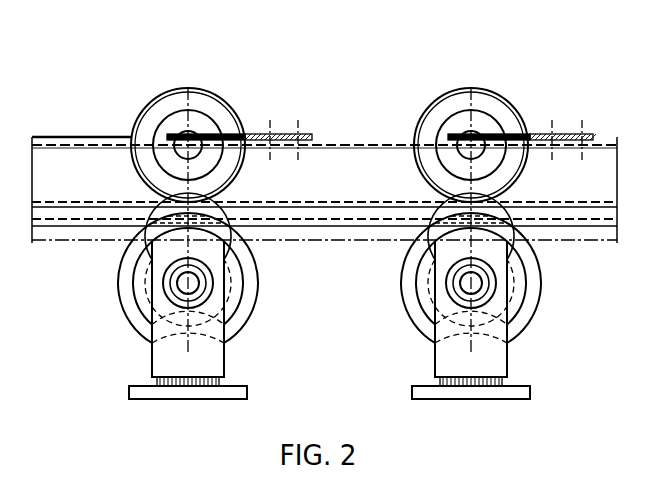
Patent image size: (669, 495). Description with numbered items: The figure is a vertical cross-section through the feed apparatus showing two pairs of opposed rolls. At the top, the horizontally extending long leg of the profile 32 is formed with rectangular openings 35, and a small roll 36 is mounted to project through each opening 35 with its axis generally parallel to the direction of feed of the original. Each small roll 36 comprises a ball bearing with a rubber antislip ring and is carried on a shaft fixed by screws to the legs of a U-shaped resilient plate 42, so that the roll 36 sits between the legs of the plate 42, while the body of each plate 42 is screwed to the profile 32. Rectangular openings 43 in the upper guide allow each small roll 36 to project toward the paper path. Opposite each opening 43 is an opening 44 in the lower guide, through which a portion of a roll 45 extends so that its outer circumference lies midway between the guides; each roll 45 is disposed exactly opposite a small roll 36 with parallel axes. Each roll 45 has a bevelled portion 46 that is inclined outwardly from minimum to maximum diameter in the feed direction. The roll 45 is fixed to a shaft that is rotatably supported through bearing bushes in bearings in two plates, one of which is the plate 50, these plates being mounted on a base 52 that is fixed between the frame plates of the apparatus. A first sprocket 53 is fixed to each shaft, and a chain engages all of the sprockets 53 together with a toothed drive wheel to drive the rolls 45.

The profile 32 is at (367, 145).
The rectangular openings 35 is at (247, 149).
The small roll 36 is at (206, 91).
The U-shaped resilient plate 42 is at (253, 134).
The rectangular openings 43 is at (236, 208).
The opening 44 is at (249, 251).
The roll 45 is at (242, 331).
The bevelled portion 46 is at (250, 305).
The plate 50 is at (225, 362).
The base 52 is at (245, 393).
The first sprocket 53 is at (232, 277).